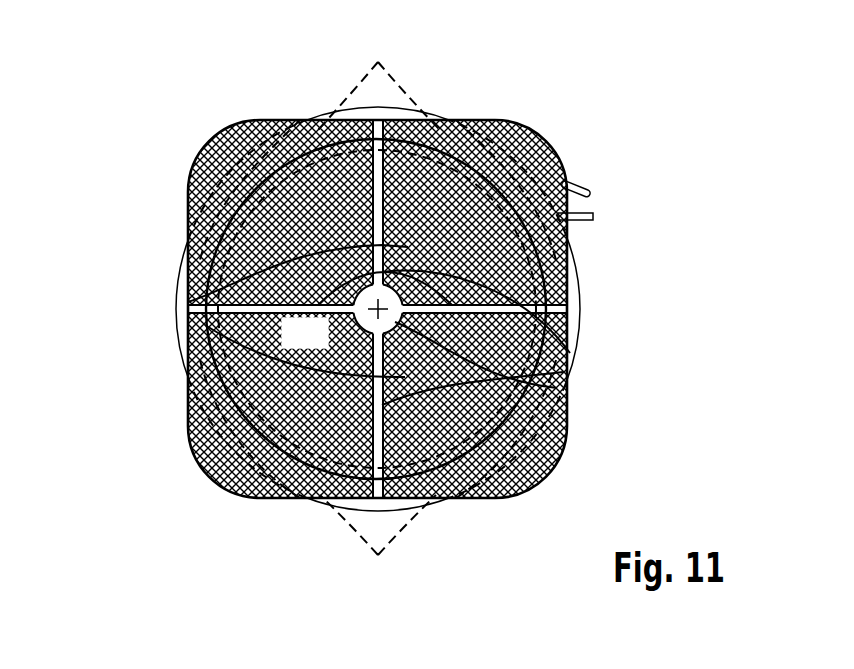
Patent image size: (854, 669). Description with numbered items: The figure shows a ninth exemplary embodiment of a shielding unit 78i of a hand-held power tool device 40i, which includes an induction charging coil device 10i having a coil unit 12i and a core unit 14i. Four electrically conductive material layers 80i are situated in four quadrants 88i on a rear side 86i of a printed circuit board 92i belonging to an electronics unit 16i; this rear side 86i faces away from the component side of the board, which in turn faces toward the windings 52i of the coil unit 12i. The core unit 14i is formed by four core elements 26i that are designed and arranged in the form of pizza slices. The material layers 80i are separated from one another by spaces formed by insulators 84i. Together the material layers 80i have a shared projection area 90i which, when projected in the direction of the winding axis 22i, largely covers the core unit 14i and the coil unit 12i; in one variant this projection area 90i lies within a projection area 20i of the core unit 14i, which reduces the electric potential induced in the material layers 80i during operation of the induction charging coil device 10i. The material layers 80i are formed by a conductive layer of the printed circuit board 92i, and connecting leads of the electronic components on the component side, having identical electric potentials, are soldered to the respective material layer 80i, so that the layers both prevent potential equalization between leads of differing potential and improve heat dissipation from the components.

The induction charging coil device 10i is at (110, 155).
The hand-held power tool device 40i is at (180, 100).
The electrically conductive material layers 80i is at (379, 313).
The shielding unit 78i is at (527, 128).
The electronics unit 16i is at (624, 166).
The printed circuit board 92i is at (560, 163).
The windings 52i is at (578, 294).
The coil unit 12i is at (500, 312).
The quadrants 88i is at (200, 383).
The winding axis 22i is at (362, 316).
The insulators 84i is at (557, 388).
The shared projection area 90i is at (555, 437).
The rear side 86i is at (188, 442).
The core unit 14i is at (450, 321).
The projection area of core unit 20i is at (450, 321).
The core elements 26i is at (540, 478).